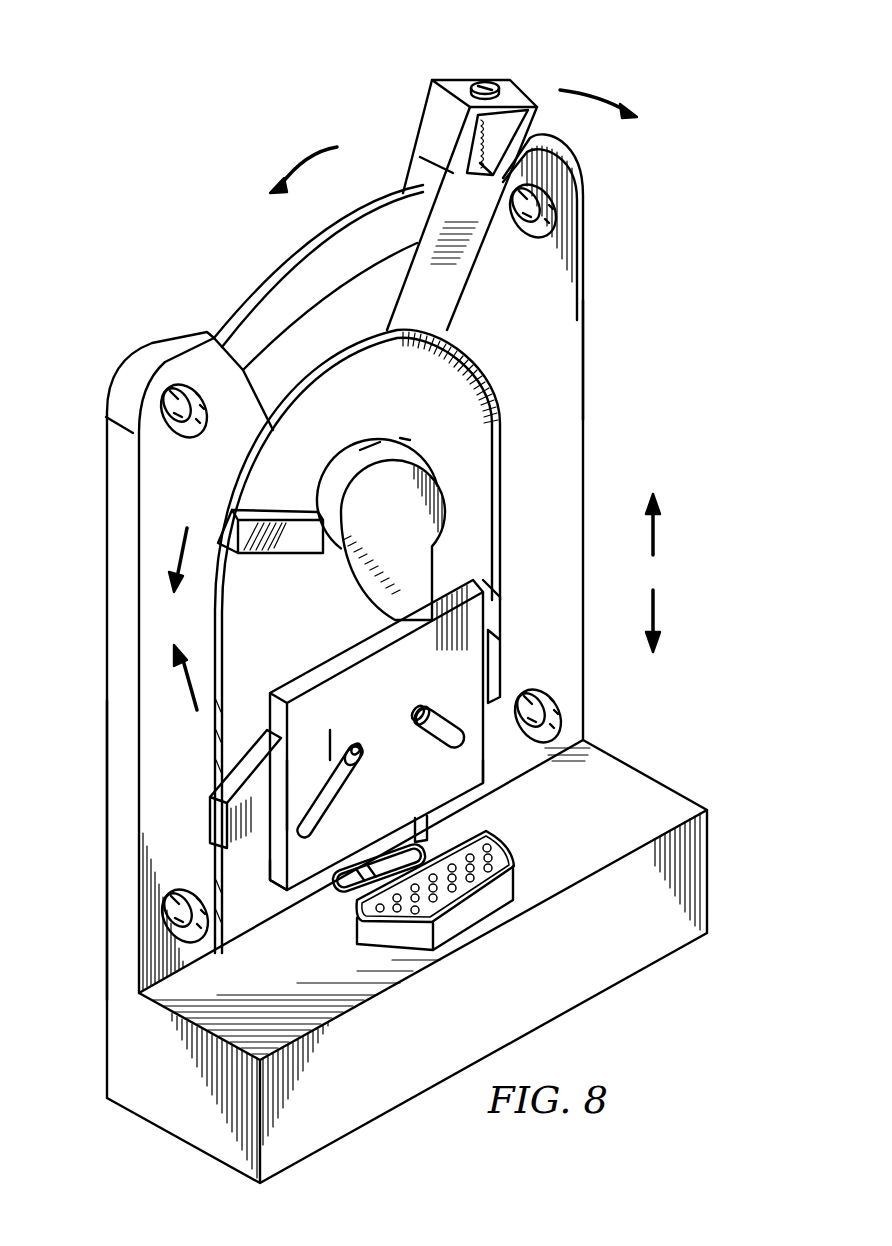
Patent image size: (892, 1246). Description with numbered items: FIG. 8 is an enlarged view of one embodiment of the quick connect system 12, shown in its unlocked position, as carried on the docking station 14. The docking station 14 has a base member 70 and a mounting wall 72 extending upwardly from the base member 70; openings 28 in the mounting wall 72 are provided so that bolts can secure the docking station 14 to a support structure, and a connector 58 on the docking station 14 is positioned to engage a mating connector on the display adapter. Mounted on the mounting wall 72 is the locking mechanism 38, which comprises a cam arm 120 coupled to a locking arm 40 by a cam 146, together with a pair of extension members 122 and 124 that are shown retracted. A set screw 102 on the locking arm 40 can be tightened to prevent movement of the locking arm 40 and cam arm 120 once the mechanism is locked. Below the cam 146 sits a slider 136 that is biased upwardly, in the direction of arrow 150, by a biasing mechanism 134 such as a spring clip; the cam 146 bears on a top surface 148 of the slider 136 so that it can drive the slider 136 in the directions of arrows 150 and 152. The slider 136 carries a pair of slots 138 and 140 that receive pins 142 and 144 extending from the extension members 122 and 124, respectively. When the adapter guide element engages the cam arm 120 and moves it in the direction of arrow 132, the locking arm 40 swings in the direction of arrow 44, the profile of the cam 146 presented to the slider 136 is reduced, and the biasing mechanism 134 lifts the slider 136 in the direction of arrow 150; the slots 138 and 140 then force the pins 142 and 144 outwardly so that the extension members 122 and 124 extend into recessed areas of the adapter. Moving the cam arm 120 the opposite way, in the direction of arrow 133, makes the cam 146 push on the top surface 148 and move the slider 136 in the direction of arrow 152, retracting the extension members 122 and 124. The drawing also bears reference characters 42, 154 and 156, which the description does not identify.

The quick connect system 12 is at (636, 361).
The docking station 14 is at (586, 450).
The openings 28 is at (192, 440).
The locking mechanism 38 is at (446, 70).
The locking arm 40 is at (438, 118).
The rotation direction arrow 42 is at (590, 90).
The arrow 44 is at (307, 157).
The connector 58 is at (500, 853).
The base member 70 is at (185, 1122).
The mounting wall 72 is at (106, 781).
The set screw 102 is at (488, 80).
The cam arm 120 is at (267, 547).
The extension member 122 is at (196, 812).
The extension member 124 is at (500, 663).
The arrow 132 is at (180, 543).
The arrow 133 is at (192, 690).
The biasing mechanism 134 is at (340, 900).
The slider 136 is at (310, 713).
The slot 138 is at (333, 787).
The slot 140 is at (440, 727).
The pin 142 is at (362, 747).
The pin 144 is at (407, 717).
The cam 146 is at (411, 538).
The top surface 148 is at (340, 663).
The arrow 150 is at (657, 533).
The arrow 152 is at (657, 613).
The surface 154 is at (364, 746).
The corner edges 156 is at (270, 870).